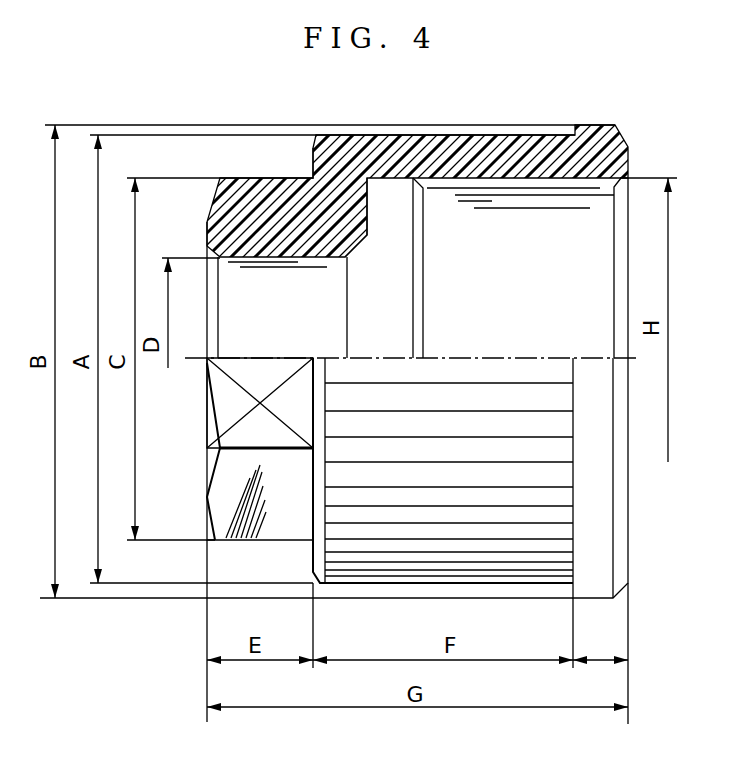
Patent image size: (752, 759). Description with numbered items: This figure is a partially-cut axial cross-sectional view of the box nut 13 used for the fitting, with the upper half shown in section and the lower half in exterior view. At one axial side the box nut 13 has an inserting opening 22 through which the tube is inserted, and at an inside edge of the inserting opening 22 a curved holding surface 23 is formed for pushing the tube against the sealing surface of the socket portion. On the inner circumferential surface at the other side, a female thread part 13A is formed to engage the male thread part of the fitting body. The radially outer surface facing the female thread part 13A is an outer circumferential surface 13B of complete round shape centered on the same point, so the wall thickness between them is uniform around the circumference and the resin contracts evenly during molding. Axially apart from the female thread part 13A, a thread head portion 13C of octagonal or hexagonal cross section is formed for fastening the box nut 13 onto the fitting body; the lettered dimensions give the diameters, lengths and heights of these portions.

The box nut 13 is at (373, 337).
The female thread part 13A is at (564, 186).
The outer circumferential surface 13B is at (488, 135).
The thread head portion 13C is at (272, 178).
The inserting opening 22 is at (303, 258).
The holding surface 23 is at (356, 244).